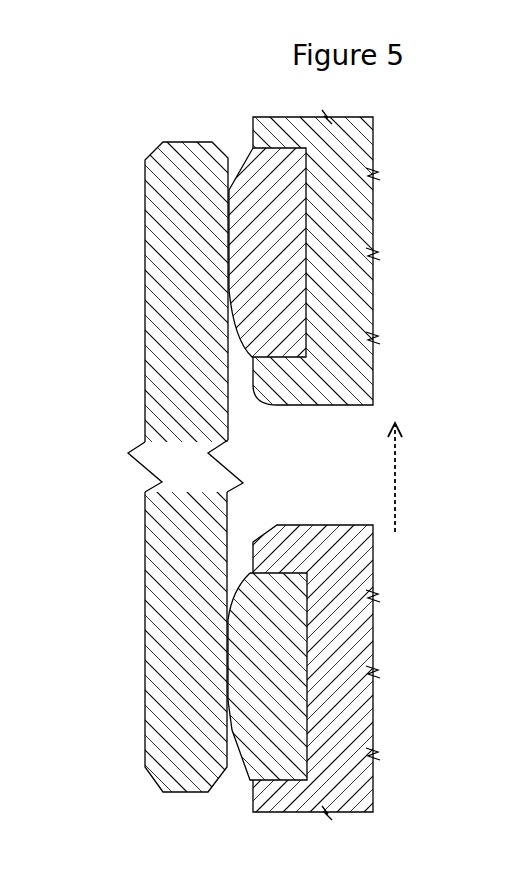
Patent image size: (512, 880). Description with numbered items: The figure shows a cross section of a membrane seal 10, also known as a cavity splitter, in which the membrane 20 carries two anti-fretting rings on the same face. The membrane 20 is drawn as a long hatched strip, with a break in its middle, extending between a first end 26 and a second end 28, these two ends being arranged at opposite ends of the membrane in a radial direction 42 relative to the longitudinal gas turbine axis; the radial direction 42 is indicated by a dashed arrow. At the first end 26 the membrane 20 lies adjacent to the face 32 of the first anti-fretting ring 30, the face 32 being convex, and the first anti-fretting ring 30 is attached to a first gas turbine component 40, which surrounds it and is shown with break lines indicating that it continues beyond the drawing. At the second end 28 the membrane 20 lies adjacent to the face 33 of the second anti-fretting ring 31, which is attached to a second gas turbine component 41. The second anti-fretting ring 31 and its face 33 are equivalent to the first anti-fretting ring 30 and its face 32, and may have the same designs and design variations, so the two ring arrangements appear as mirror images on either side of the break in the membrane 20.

The membrane seal 10 is at (414, 177).
The membrane 20 is at (148, 467).
The first end 26 is at (158, 237).
The second end 28 is at (157, 673).
The first anti-fretting ring 30 is at (340, 257).
The second anti-fretting ring 31 is at (264, 670).
The face 32 is at (240, 170).
The face 33 is at (237, 602).
The first gas turbine component 40 is at (303, 405).
The second gas turbine component 41 is at (292, 522).
The radial direction 42 is at (395, 498).